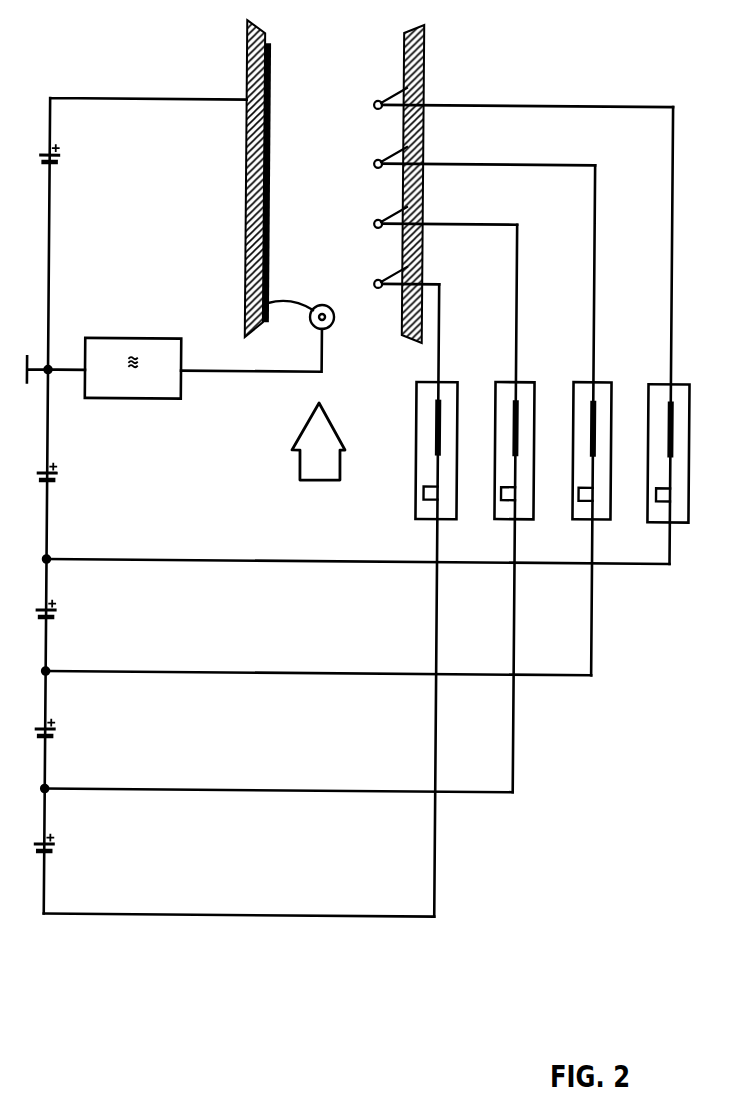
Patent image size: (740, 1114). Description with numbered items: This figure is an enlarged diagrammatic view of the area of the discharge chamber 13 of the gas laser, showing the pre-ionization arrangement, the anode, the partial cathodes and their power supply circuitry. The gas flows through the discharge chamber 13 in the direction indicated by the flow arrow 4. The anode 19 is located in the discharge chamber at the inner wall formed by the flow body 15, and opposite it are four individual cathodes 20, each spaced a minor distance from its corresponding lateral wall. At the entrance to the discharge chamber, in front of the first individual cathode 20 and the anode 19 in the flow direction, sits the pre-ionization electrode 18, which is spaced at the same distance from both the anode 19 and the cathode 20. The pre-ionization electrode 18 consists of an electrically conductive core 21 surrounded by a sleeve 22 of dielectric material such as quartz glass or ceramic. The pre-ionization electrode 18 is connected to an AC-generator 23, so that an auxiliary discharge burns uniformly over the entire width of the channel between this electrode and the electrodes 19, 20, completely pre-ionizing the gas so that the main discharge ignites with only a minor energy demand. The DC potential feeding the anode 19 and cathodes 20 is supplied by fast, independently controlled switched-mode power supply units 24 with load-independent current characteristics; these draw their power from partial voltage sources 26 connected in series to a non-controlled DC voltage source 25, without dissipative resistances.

The flow arrows 4 is at (312, 465).
The discharge chamber 13 is at (284, 188).
The flow body 15 is at (243, 270).
The pre-ionization electrode 18 is at (337, 335).
The anode 19 is at (244, 79).
The individual cathodes 20 is at (440, 261).
The electrically conductive core 21 is at (307, 323).
The sleeve 22 is at (248, 309).
The AC-generator 23 is at (106, 352).
The switched-mode power supply units 24 is at (676, 390).
The DC voltage source 25 is at (57, 171).
The partial voltage sources 26 is at (91, 882).